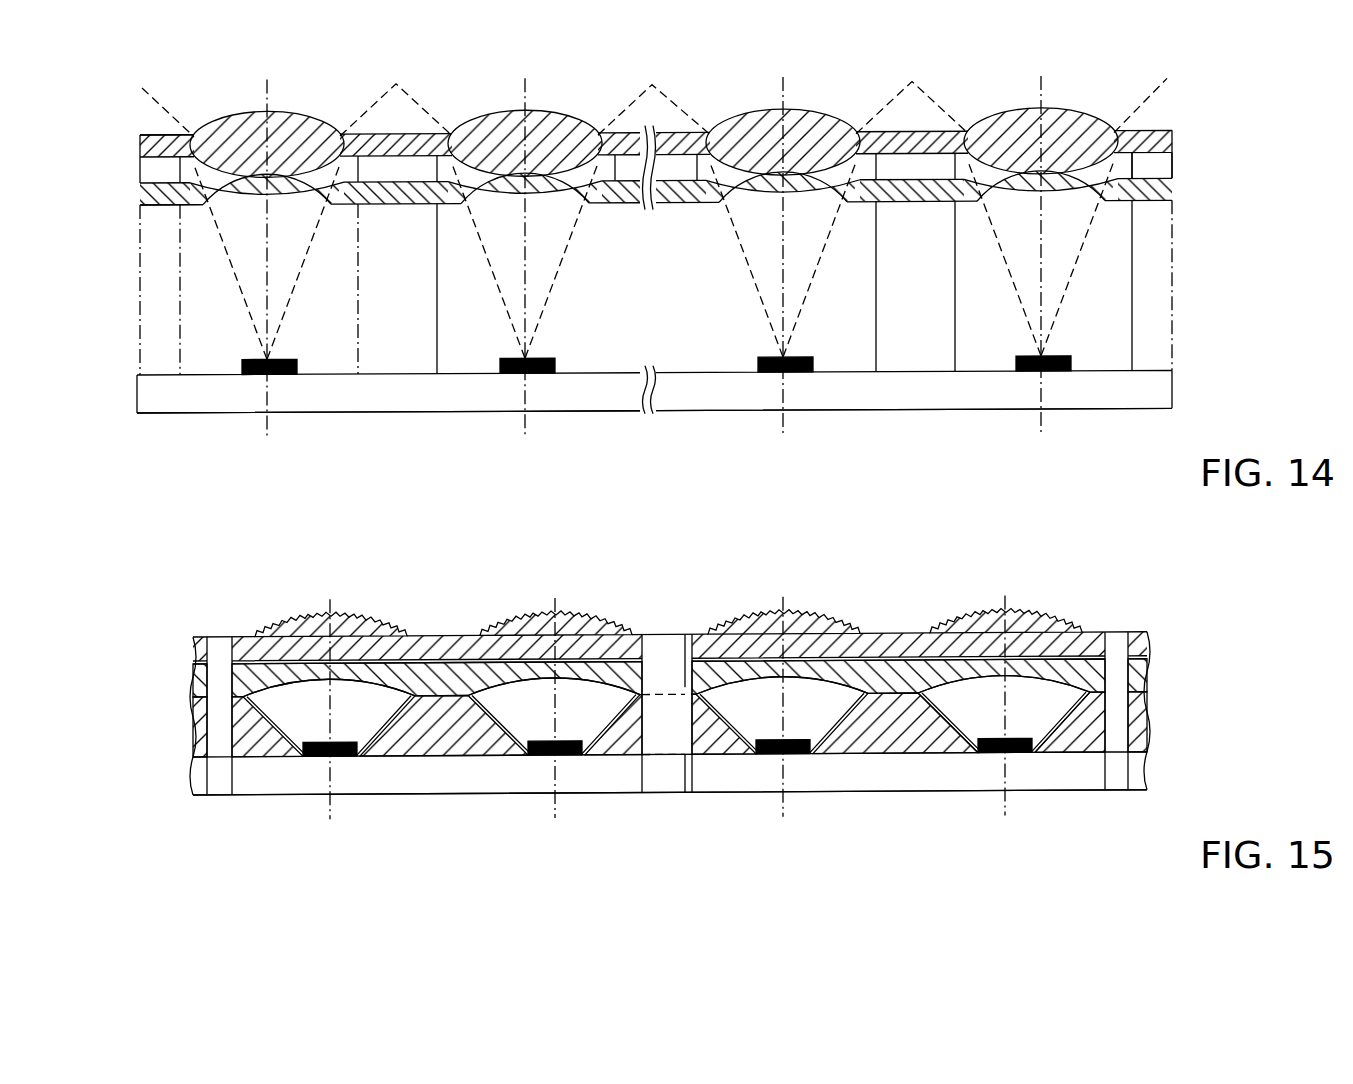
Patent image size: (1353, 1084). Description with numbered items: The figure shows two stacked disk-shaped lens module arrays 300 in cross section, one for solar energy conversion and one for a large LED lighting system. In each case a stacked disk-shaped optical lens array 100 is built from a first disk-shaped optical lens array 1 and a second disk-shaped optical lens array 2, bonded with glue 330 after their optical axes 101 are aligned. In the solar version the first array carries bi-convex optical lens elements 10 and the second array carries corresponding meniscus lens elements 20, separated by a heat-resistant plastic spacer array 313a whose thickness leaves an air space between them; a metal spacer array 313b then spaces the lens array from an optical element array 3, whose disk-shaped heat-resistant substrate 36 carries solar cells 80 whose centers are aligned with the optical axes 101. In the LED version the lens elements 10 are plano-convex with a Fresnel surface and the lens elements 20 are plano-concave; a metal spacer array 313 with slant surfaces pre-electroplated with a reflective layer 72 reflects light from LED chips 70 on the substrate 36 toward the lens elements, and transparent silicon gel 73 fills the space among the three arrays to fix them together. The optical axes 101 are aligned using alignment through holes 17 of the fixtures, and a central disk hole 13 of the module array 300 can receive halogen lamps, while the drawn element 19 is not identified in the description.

In FIG. 14, the first disk-shaped optical lens array 1 is at (1170, 139).
In FIG. 15, the first disk-shaped optical lens array 1 is at (1147, 645).
In FIG. 14, the second disk-shaped optical lens array 2 is at (1172, 201).
In FIG. 15, the second disk-shaped optical lens array 2 is at (1147, 685).
In FIG. 14, the optical element array 3 is at (1182, 377).
In FIG. 15, the optical element array 3 is at (1163, 775).
In FIG. 14, the optical lens element 10 is at (1062, 118).
In FIG. 15, the optical lens element 10 is at (1032, 634).
In FIG. 15, the central disk hole 13 is at (662, 637).
In FIG. 15, the alignment through hole 17 is at (221, 640).
In FIG. 15, the adhesive / thin spacer layer 19 is at (691, 637).
In FIG. 14, the optical lens element 20 is at (1088, 237).
In FIG. 15, the optical lens element 20 is at (1047, 676).
In FIG. 14, the disk-shaped heat-resistant substrate 36 is at (837, 398).
In FIG. 15, the disk-shaped heat-resistant substrate 36 is at (887, 768).
In FIG. 15, the LED chip 70 is at (345, 757).
In FIG. 15, the reflective layer 72 is at (1042, 708).
In FIG. 15, the transparent silicon gel 73 is at (1060, 701).
In FIG. 14, the solar cell 80 is at (289, 360).
In FIG. 14, the stacked disk-shaped optical lens array 100 is at (1248, 105).
In FIG. 15, the stacked disk-shaped optical lens array 100 is at (1233, 599).
In FIG. 14, the optical axis 101 is at (654, 243).
In FIG. 15, the optical axis 101 is at (667, 689).
In FIG. 14, the stacked disk-shaped lens module array 300 is at (1298, 100).
In FIG. 15, the stacked disk-shaped lens module array 300 is at (1290, 599).
In FIG. 14, the spacer array 313 is at (160, 172).
In FIG. 15, the spacer array 313 is at (245, 722).
In FIG. 14, the spacer array 313a is at (1172, 175).
In FIG. 14, the spacer array 313b is at (1160, 315).
In FIG. 14, the glue 330 is at (150, 137).
In FIG. 15, the glue 330 is at (1147, 664).